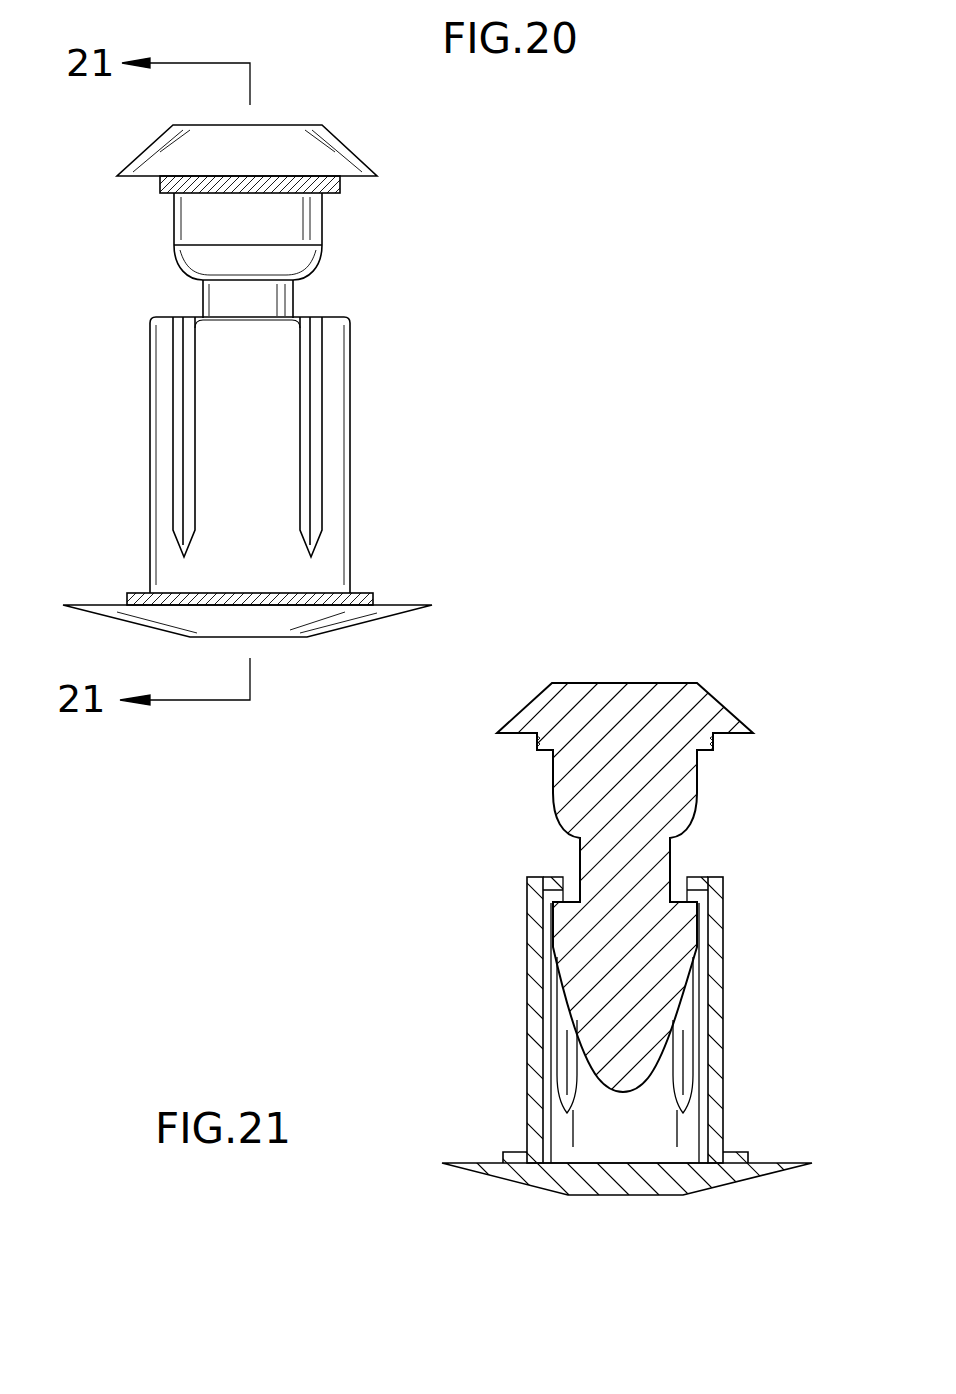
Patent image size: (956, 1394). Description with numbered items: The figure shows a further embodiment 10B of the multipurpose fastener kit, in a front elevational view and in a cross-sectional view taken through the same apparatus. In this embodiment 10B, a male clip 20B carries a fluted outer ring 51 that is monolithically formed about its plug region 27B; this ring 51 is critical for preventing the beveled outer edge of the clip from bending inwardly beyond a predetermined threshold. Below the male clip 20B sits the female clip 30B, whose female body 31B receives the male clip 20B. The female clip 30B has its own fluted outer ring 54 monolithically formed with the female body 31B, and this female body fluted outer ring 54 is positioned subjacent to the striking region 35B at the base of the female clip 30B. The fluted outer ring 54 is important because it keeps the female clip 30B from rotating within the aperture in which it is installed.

In FIG. 20, the further embodiment 10B is at (390, 146).
In FIG. 21, the further embodiment 10B is at (703, 653).
In FIG. 20, the male clip 20B is at (194, 306).
In FIG. 21, the male clip 20B is at (580, 853).
In FIG. 20, the plug region 27B is at (322, 235).
In FIG. 21, the plug region 27B is at (572, 797).
In FIG. 20, the fluted outer ring 51 is at (340, 185).
In FIG. 21, the fluted outer ring 51 is at (720, 740).
In FIG. 20, the female clip 30B is at (148, 560).
In FIG. 21, the female clip 30B is at (738, 1128).
In FIG. 20, the female body 31B is at (257, 475).
In FIG. 21, the female body 31B is at (527, 993).
In FIG. 20, the fluted outer ring 54 is at (373, 600).
In FIG. 21, the fluted outer ring 54 is at (503, 1152).
In FIG. 20, the striking region 35B is at (263, 637).
In FIG. 21, the striking region 35B is at (635, 1195).